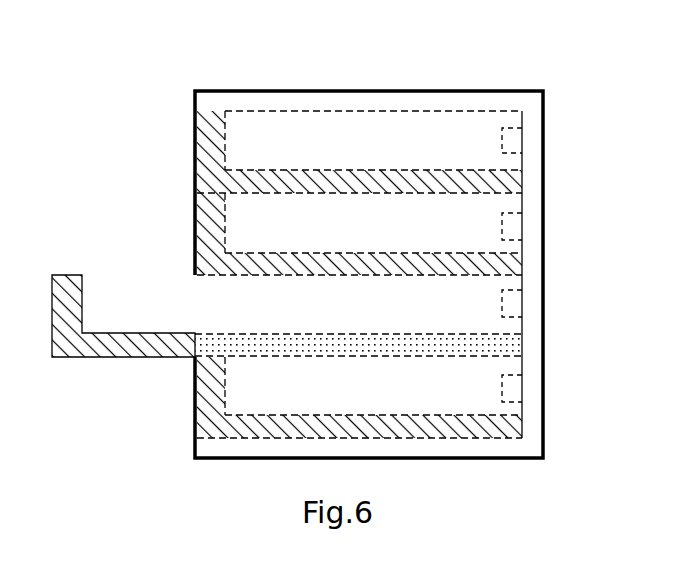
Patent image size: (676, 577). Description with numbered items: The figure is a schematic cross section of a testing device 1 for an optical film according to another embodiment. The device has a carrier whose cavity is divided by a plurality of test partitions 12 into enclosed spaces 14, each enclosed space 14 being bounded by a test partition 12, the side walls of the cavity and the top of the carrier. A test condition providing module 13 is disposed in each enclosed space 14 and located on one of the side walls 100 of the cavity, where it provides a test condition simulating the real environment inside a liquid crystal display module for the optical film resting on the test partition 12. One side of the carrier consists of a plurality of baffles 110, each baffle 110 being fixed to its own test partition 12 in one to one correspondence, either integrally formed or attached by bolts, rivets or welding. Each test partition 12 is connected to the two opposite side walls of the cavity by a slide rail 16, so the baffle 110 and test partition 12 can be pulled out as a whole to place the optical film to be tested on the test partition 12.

The testing device 1 is at (186, 82).
The side wall 100 is at (521, 122).
The baffle 110 is at (210, 151).
The test partition 12 is at (349, 265).
The enclosed space 14 is at (400, 140).
The test condition providing module 13 is at (510, 143).
The slide rail 16 is at (505, 343).